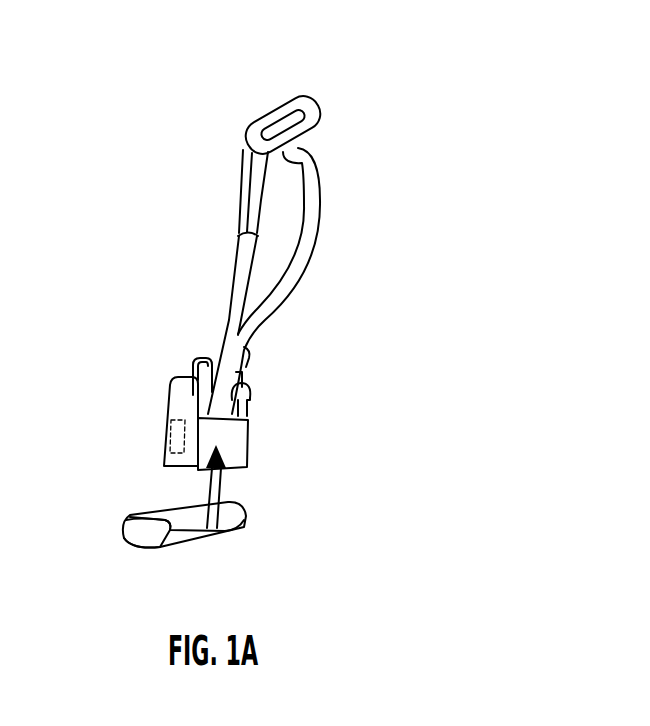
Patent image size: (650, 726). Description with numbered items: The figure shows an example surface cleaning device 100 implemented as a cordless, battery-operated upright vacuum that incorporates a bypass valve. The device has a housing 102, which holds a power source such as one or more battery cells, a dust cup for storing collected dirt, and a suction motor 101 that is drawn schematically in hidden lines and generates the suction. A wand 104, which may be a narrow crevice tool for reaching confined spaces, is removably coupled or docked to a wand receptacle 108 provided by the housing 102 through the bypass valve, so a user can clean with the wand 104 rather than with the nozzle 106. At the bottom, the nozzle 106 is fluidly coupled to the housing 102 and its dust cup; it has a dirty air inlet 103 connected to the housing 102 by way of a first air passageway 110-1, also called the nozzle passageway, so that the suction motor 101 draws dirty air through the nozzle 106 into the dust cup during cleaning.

The surface cleaning device 100 is at (121, 151).
The suction motor 101 is at (165, 433).
The housing 102 is at (192, 377).
The dirty air inlet 103 is at (143, 547).
The wand 104 is at (295, 108).
The nozzle 106 is at (141, 514).
The wand receptacle 108 is at (253, 362).
The first air passageway 110-1 is at (220, 497).